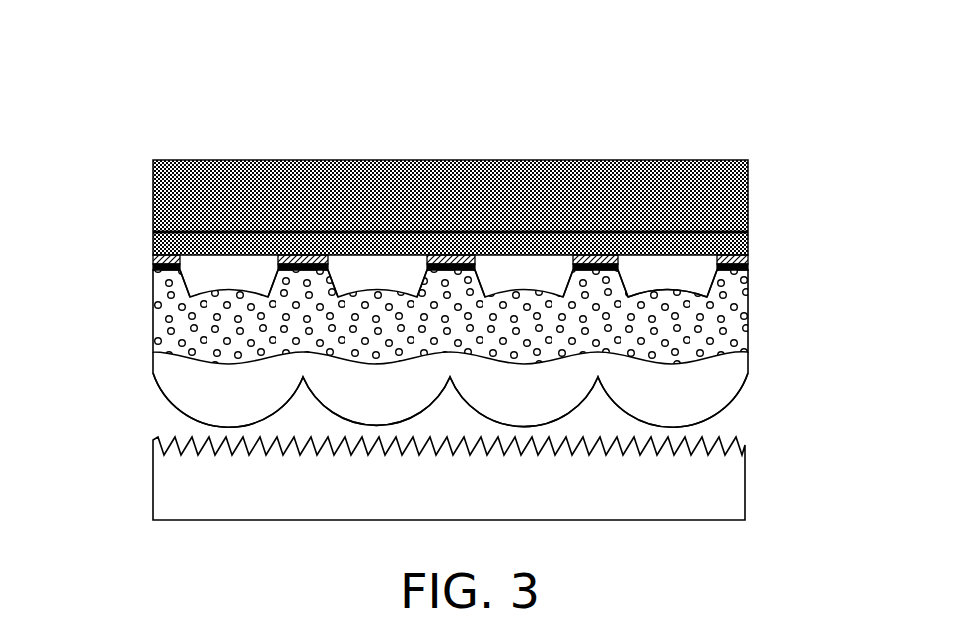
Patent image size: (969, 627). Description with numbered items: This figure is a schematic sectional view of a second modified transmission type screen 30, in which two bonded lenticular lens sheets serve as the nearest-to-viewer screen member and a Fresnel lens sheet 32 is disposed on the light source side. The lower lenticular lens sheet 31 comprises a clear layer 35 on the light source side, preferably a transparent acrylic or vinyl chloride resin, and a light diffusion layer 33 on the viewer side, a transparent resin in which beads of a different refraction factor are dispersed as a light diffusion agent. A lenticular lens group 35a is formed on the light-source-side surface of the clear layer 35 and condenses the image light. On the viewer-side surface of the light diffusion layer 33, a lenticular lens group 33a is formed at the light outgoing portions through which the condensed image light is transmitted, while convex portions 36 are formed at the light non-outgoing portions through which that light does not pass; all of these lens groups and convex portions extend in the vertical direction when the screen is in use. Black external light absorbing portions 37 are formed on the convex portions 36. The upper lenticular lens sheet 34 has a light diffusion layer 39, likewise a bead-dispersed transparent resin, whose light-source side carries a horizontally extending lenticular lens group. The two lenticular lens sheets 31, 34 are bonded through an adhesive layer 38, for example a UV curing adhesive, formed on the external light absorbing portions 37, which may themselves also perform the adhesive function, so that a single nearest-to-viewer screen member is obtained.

The transmission type screen 30 is at (606, 124).
The lenticular lens sheet 31 is at (115, 364).
The Fresnel lens sheet 32 is at (130, 480).
The light diffusion layer 33 is at (680, 330).
The lenticular lens group 33a is at (697, 285).
The lenticular lens sheet 34 is at (116, 201).
The clear layer 35 is at (680, 388).
The lenticular lens group 35a is at (720, 410).
The convex portions 36 is at (627, 278).
The external light absorbing portions 37 is at (748, 270).
The adhesive layer 38 is at (748, 260).
The light diffusion layer 39 is at (730, 181).